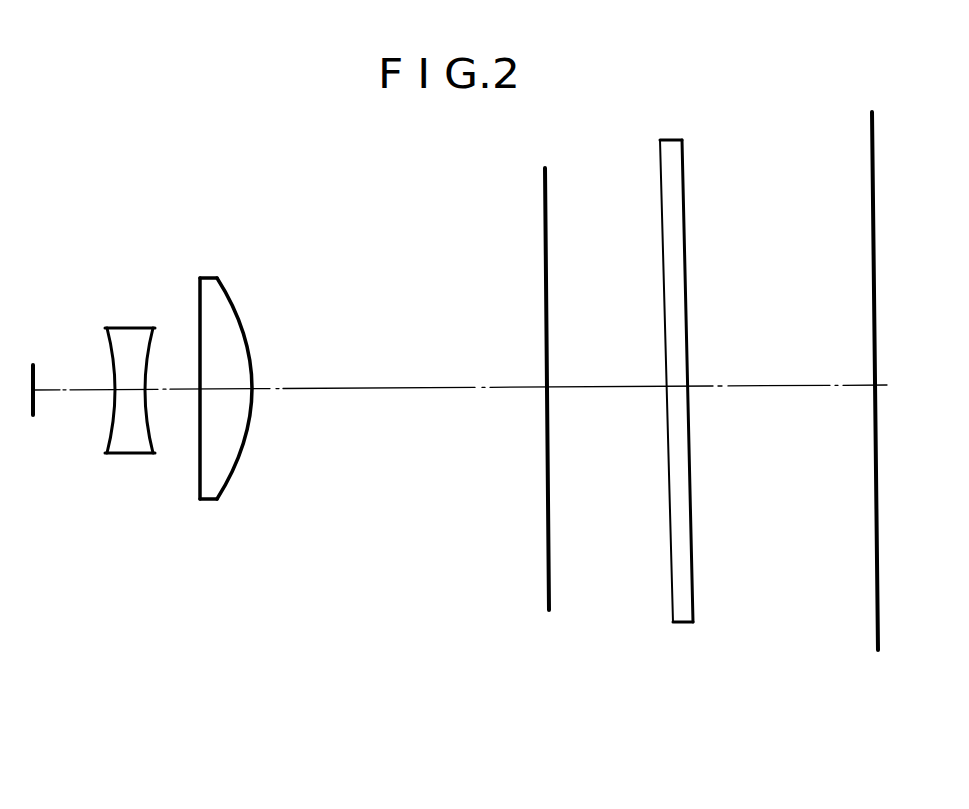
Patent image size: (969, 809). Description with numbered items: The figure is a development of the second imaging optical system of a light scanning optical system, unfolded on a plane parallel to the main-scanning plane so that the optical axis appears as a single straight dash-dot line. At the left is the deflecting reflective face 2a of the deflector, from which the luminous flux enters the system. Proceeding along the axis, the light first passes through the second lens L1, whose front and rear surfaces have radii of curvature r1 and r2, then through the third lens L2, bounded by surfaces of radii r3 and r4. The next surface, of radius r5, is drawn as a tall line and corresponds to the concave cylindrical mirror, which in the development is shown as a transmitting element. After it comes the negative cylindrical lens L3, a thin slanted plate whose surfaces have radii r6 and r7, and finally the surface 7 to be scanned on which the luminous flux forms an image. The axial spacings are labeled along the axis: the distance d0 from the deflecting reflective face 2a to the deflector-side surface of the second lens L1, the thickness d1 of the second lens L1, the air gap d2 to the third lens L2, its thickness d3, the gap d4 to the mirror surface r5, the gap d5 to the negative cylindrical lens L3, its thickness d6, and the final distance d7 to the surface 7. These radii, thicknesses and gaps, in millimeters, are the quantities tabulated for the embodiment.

The deflecting reflective face 2a is at (37, 407).
The surface to be scanned 7 is at (875, 625).
The second lens L1 is at (119, 356).
The third lens L2 is at (219, 359).
The negative cylindrical lens L3 is at (672, 350).
The radius of curvature of first lens surface r1 is at (107, 340).
The radius of curvature of second lens surface r2 is at (155, 327).
The radius of curvature of third lens surface r3 is at (200, 290).
The radius of curvature of fourth lens surface r4 is at (230, 293).
The radius of curvature of fifth surface r5 is at (543, 193).
The radius of curvature of sixth lens surface r6 is at (660, 158).
The radius of curvature of seventh lens surface r7 is at (685, 150).
The distance from deflecting reflective face to second lens d0 is at (73, 388).
The thickness of second lens d1 is at (130, 388).
The air gap between second and third lenses d2 is at (178, 388).
The thickness of third lens d3 is at (225, 388).
The air gap between third lens and mirror d4 is at (412, 388).
The air gap between mirror and negative cylindrical lens d5 is at (622, 386).
The thickness of negative cylindrical lens d6 is at (677, 386).
The air gap between negative cylindrical lens and scanned surface d7 is at (795, 386).